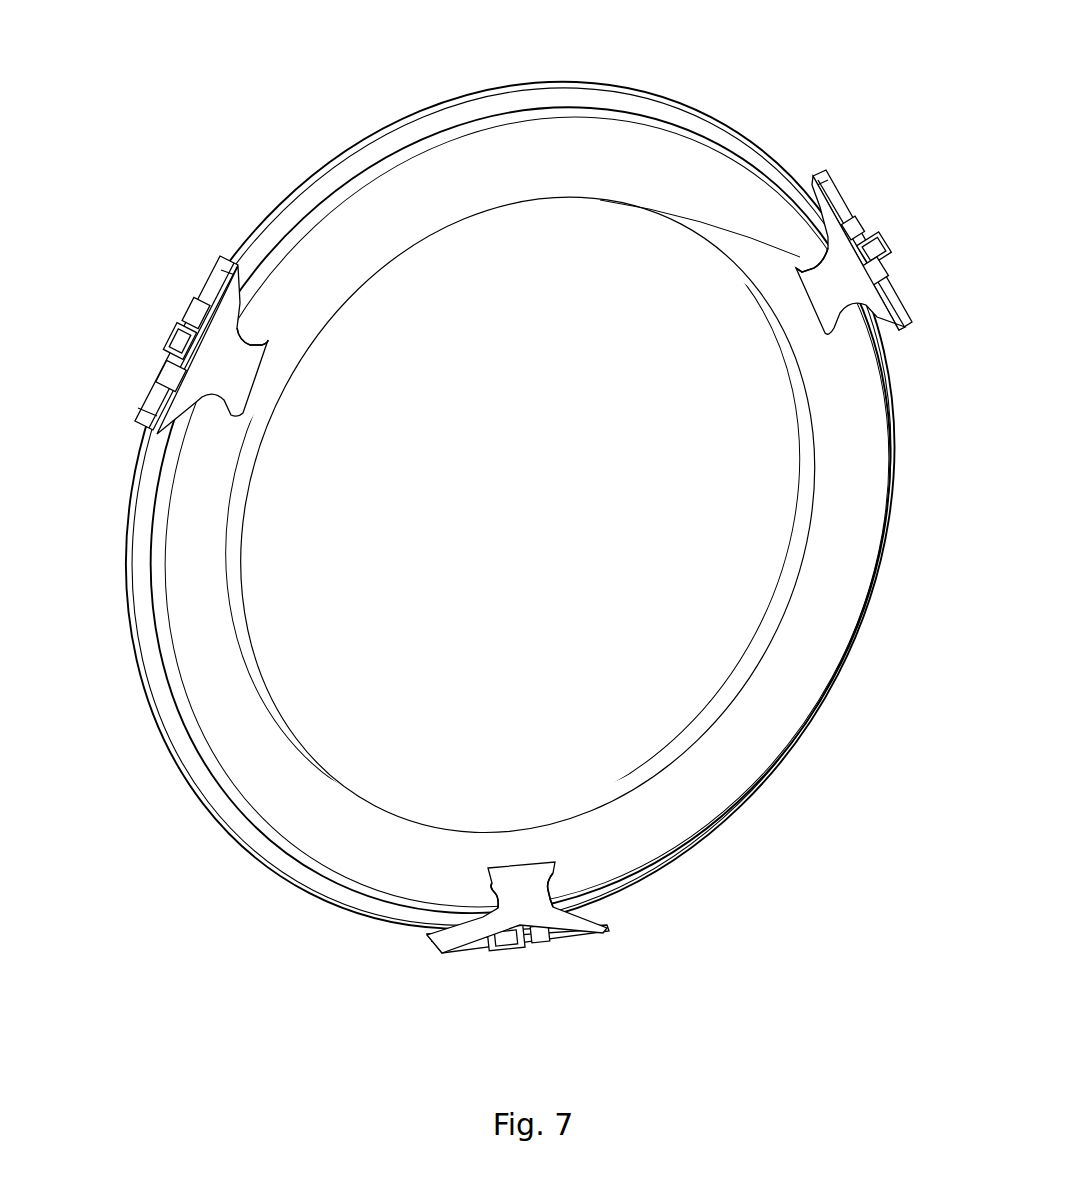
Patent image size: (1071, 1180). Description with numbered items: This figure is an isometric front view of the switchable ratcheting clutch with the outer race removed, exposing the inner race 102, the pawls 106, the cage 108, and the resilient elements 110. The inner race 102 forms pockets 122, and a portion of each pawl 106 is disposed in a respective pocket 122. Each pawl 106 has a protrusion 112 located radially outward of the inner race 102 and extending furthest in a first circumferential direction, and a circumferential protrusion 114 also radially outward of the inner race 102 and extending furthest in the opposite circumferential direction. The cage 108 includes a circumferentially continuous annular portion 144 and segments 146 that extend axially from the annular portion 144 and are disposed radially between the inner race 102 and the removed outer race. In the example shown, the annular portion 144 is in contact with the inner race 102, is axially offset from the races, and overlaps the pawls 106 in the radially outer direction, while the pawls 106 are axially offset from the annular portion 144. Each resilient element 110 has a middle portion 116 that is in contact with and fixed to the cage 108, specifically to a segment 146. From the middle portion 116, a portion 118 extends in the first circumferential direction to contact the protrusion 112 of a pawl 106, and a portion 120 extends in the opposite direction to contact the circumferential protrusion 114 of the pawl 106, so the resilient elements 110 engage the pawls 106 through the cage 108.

The inner race 102 is at (555, 200).
The pawl 106 is at (531, 564).
The cage 108 is at (519, 531).
The resilient element 110 is at (514, 595).
The protrusion 112 is at (148, 414).
The circumferential protrusion 114 is at (224, 270).
The middle portion 116 is at (853, 233).
The portion 118 is at (167, 380).
The portion 120 is at (205, 308).
The pocket 122 is at (258, 330).
The circumferentially continuous annular portion 144 is at (608, 93).
The segment 146 is at (172, 340).